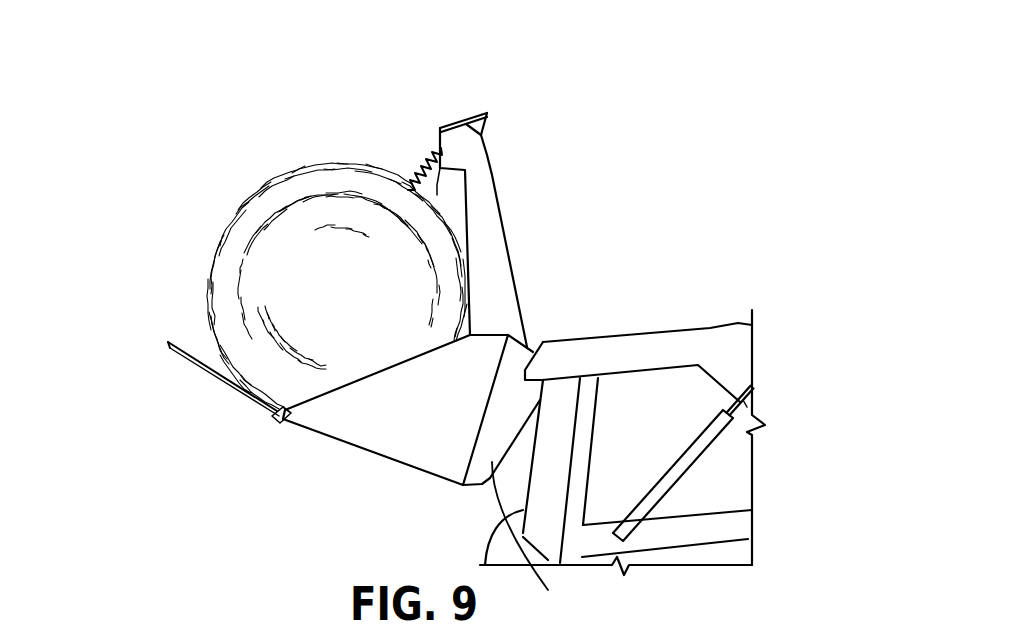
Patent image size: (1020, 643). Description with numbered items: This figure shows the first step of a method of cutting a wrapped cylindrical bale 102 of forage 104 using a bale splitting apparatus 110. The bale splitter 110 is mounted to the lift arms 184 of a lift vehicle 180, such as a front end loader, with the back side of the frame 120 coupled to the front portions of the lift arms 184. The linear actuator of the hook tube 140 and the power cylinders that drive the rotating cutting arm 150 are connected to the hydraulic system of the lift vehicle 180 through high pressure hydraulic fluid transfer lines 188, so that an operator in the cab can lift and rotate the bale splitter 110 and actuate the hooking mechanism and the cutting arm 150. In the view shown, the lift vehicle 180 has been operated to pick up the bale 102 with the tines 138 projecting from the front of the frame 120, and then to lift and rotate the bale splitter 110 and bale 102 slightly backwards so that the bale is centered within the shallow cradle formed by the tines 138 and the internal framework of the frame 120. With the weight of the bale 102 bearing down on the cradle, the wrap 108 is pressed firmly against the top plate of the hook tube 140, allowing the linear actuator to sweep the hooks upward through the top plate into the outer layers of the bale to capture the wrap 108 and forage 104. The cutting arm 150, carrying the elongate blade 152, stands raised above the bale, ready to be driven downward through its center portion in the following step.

The wrapped cylindrical bale 102 is at (302, 157).
The forage 104 is at (285, 240).
The wrap 108 is at (253, 207).
The bale splitting apparatus 110 is at (528, 137).
The frame 120 is at (417, 473).
The tines 138 is at (180, 364).
The hook tube 140 is at (338, 415).
The rotating cutting arm 150 is at (497, 233).
The elongate blade 152 is at (413, 138).
The lift vehicle 180 is at (710, 282).
The lift arms 184 is at (534, 542).
The high pressure hydraulic fluid transfer lines 188 is at (547, 370).